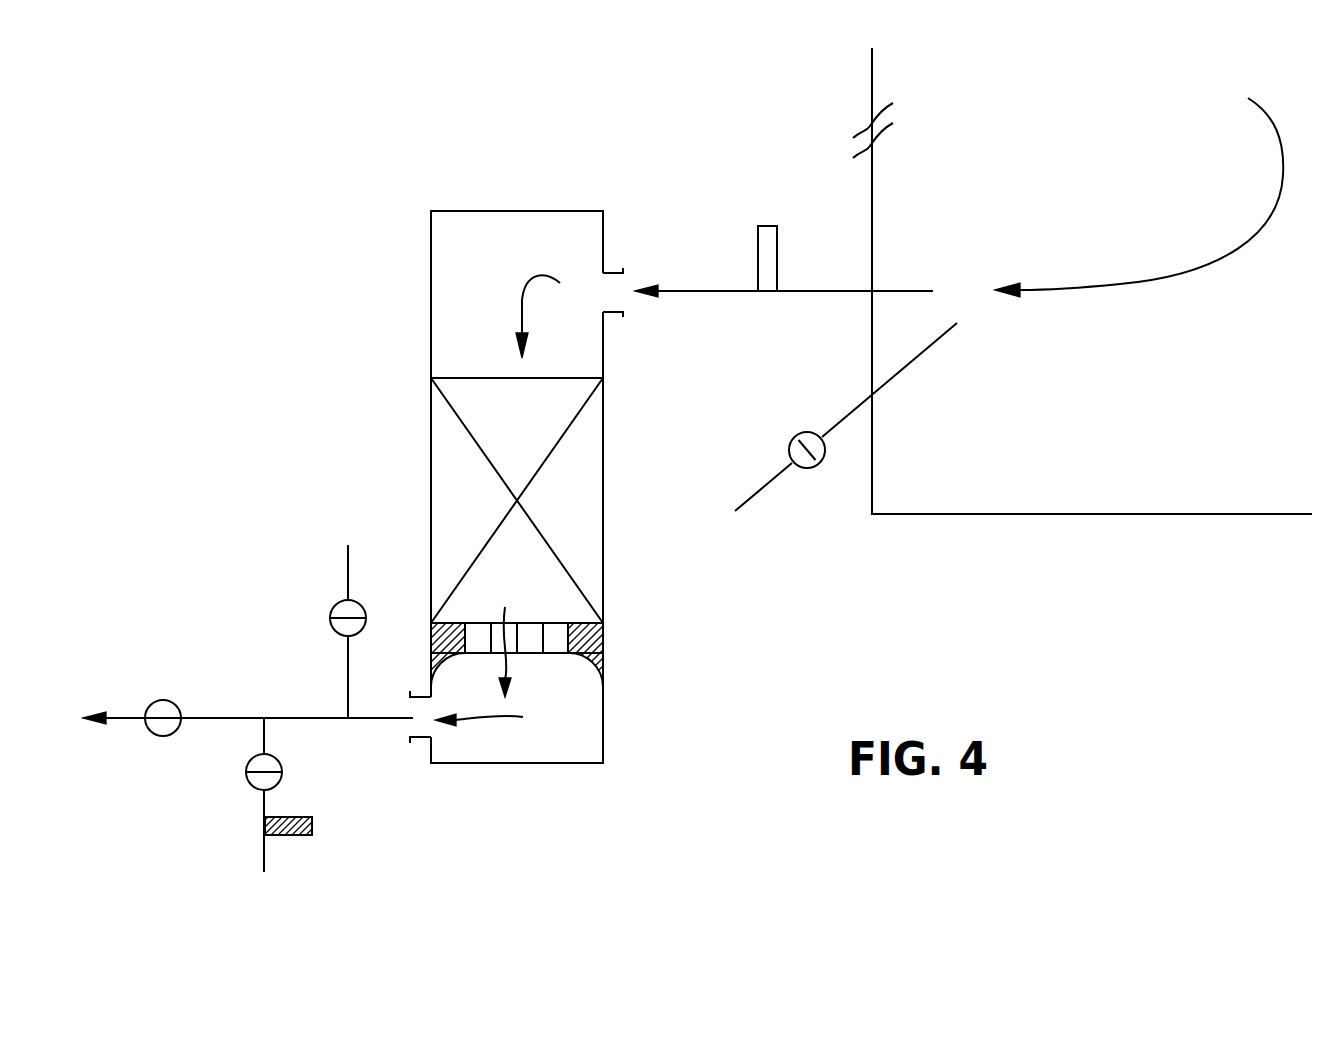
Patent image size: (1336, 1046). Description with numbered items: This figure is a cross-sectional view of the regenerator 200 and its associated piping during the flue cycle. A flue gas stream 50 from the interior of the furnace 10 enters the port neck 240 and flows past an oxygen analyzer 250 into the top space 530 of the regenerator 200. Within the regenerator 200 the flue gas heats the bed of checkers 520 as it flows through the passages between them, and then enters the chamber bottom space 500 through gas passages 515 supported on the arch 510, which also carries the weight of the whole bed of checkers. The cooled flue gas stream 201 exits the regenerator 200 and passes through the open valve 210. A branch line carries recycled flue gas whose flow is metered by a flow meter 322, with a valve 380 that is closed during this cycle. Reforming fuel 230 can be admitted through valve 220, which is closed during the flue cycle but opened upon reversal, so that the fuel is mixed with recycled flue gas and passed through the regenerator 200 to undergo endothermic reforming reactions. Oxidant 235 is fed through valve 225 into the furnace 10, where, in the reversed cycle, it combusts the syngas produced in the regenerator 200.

The furnace 10 is at (1208, 514).
The flue gas stream 50 is at (1154, 310).
The regenerator 200 is at (470, 211).
The cooled flue gas stream 201 is at (382, 729).
The valve 210 is at (163, 736).
The valve 220 is at (330, 618).
The valve 225 is at (800, 468).
The reforming fuel 230 is at (348, 565).
The oxidant 235 is at (745, 505).
The port neck 240 is at (806, 291).
The oxygen analyzer 250 is at (778, 226).
The flow meter 322 is at (295, 835).
The valve 380 is at (282, 772).
The chamber bottom space 500 is at (579, 750).
The arch 510 is at (610, 650).
The gas passages 515 is at (560, 623).
The checkers 520 is at (595, 517).
The top space 530 is at (486, 260).